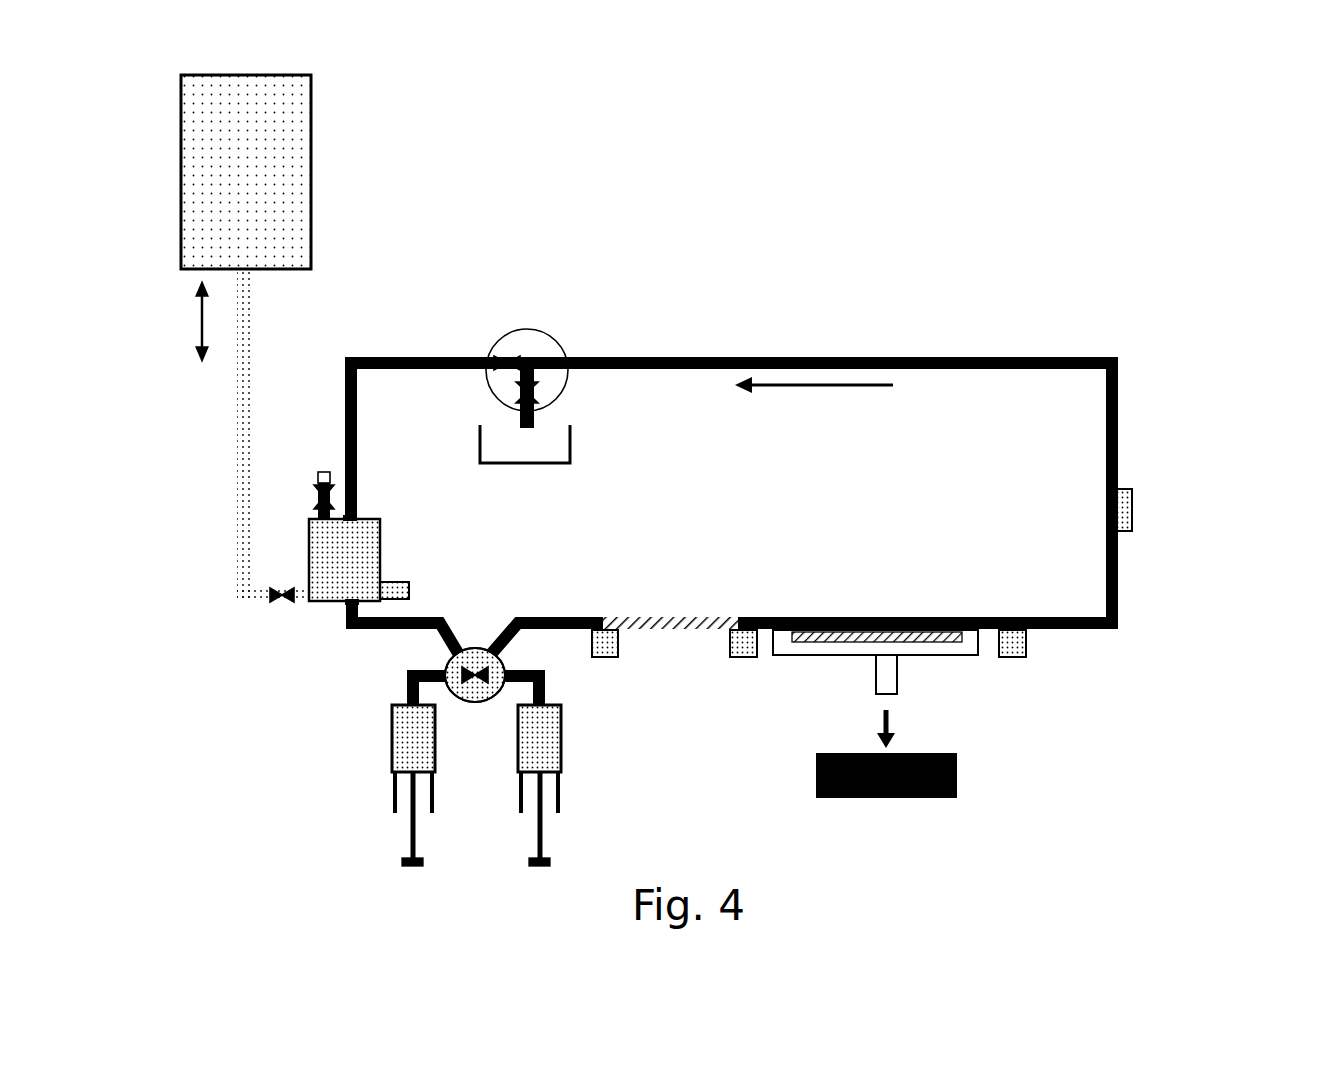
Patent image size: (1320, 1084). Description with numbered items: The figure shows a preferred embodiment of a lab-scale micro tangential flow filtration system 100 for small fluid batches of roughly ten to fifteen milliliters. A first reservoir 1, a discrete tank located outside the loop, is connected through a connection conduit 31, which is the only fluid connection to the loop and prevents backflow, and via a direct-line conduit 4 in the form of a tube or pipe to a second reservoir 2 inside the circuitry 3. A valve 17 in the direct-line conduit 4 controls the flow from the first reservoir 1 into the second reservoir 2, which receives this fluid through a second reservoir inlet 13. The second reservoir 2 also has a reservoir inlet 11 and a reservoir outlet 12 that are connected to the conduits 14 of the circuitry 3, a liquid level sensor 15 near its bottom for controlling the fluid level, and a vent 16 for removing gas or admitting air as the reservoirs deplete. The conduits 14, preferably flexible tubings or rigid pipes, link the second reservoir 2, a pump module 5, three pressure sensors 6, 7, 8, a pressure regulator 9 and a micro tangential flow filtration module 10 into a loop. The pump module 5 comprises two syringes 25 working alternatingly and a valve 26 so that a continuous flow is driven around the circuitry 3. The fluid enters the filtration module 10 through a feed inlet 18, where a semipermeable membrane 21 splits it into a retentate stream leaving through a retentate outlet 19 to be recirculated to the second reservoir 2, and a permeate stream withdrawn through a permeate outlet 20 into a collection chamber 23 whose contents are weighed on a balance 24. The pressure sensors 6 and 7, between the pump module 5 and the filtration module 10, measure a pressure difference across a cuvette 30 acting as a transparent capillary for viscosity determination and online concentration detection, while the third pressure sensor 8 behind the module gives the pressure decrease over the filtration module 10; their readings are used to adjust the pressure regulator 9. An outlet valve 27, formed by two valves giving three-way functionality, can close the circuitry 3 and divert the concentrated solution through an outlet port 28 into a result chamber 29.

The first reservoir 1 is at (300, 165).
The second reservoir 2 is at (358, 576).
The circuitry 3 is at (996, 358).
The direct-line conduit 4 is at (248, 463).
The pump module 5 is at (413, 757).
The pressure sensor 6 is at (610, 645).
The pressure sensor 7 is at (740, 643).
The pressure sensor 8 is at (1020, 643).
The pressure regulator 9 is at (1125, 505).
The micro tangential flow filtration module 10 is at (875, 617).
The reservoir inlet 11 is at (355, 517).
The reservoir outlet 12 is at (342, 605).
The second reservoir inlet 13 is at (308, 580).
The conduits 14 is at (357, 398).
The liquid level sensor 15 is at (402, 585).
The vent 16 is at (318, 497).
The valve 17 is at (283, 602).
The feed inlet 18 is at (766, 617).
The retentate outlet 19 is at (986, 617).
The permeate outlet 20 is at (903, 675).
The semipermeable membrane 21 is at (838, 637).
The collection chamber 23 is at (886, 775).
The balance 24 is at (886, 775).
The syringes 25 is at (513, 770).
The valve 26 is at (475, 695).
The outlet valve 27 is at (565, 350).
The outlet port 28 is at (534, 424).
The result chamber 29 is at (570, 452).
The cuvette 30 is at (672, 608).
The connection conduit 31 is at (247, 320).
The flow filtration system 100 is at (807, 232).